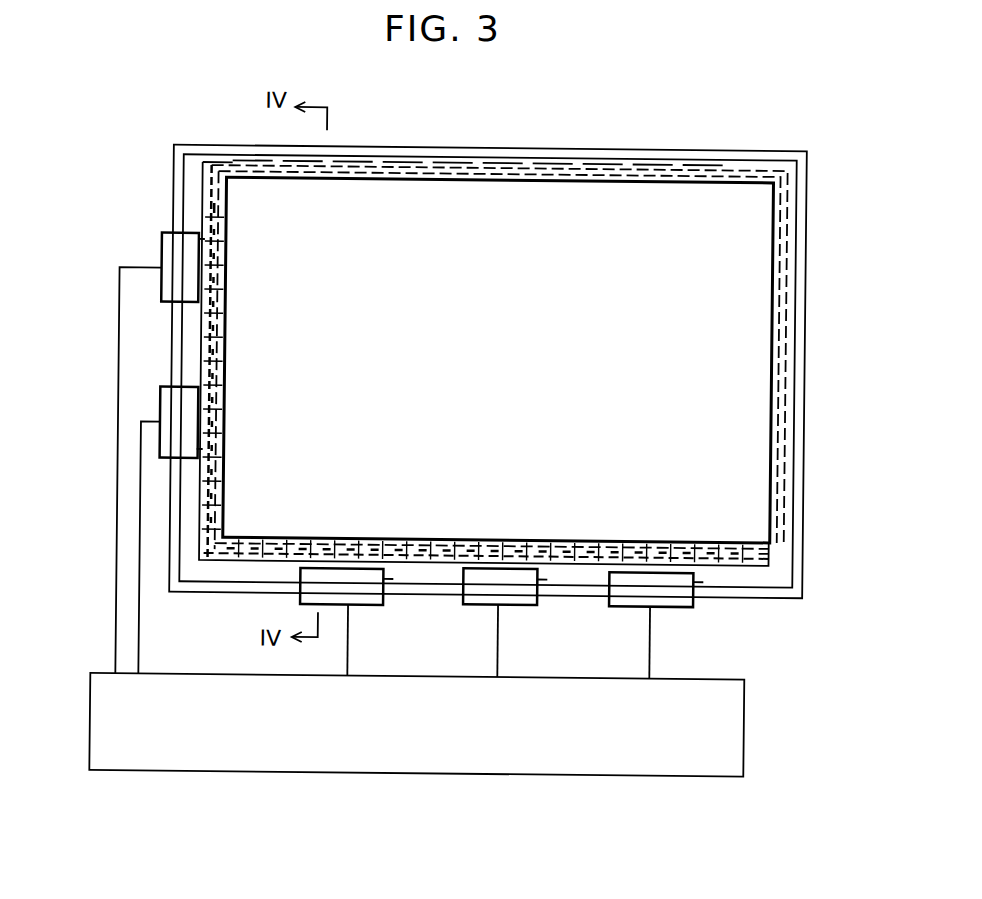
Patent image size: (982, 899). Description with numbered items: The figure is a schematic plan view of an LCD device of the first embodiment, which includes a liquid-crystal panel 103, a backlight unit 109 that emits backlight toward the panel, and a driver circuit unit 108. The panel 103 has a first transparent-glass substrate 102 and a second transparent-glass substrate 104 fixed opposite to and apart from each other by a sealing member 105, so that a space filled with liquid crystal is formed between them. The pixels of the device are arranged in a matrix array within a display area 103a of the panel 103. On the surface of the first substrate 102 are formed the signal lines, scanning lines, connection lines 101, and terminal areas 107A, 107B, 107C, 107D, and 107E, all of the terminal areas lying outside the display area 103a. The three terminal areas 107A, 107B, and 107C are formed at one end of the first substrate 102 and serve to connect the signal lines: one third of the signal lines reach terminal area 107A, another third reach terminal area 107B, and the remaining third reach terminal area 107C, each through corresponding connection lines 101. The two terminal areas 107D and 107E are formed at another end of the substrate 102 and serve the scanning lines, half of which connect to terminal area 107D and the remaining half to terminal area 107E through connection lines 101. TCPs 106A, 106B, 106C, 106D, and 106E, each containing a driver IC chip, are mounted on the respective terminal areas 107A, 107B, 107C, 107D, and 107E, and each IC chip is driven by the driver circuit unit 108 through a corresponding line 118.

The connection lines 101 is at (217, 234).
The first transparent-glass substrate 102 is at (780, 578).
The liquid-crystal panel 103 is at (504, 153).
The display area 103a is at (498, 317).
The second transparent-glass substrate 104 is at (789, 241).
The sealing member 105 is at (784, 306).
The TCP 106A is at (362, 608).
The TCP 106B is at (512, 607).
The TCP 106C is at (672, 607).
The TCP 106D is at (160, 251).
The TCP 106E is at (170, 401).
The terminal area 107A is at (386, 581).
The terminal area 107B is at (540, 580).
The terminal area 107C is at (697, 581).
The terminal area 107D is at (206, 237).
The terminal area 107E is at (195, 466).
The driver circuit unit 108 is at (747, 726).
The backlight unit 109 is at (714, 157).
The lines 118 is at (139, 594).